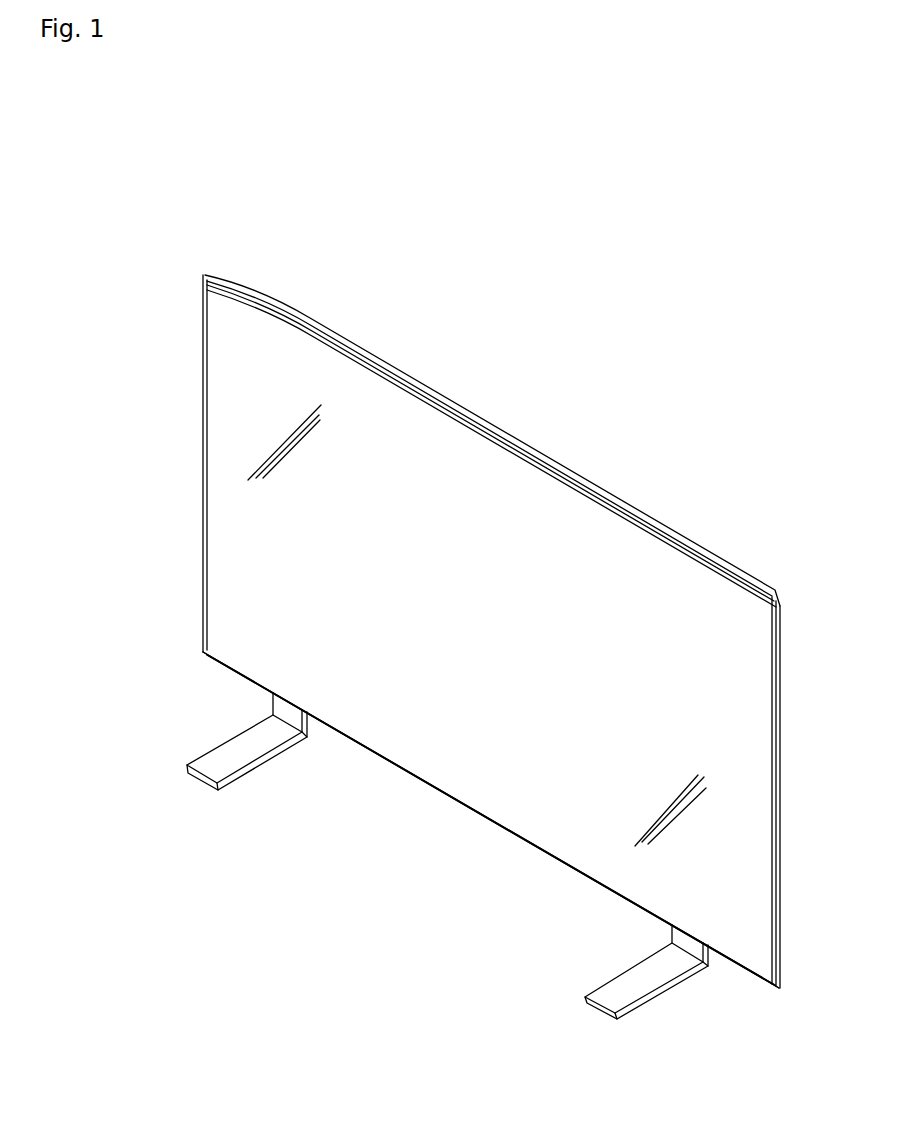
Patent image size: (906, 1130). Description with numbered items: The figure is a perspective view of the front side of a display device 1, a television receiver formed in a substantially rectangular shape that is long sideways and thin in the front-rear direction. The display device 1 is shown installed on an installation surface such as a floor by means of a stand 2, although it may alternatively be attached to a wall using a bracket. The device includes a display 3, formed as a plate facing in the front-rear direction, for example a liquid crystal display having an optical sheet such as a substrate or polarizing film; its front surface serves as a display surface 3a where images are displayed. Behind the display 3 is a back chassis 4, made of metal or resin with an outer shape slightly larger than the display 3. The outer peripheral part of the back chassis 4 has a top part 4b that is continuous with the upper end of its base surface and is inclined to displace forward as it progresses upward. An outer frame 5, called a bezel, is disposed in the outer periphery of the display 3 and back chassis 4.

The display device 1 is at (190, 208).
The stand 2 is at (218, 762).
The display 3 is at (497, 783).
The display surface 3a is at (550, 813).
The back chassis 4 is at (585, 480).
The top part 4b is at (622, 515).
The outer frame 5 is at (657, 527).